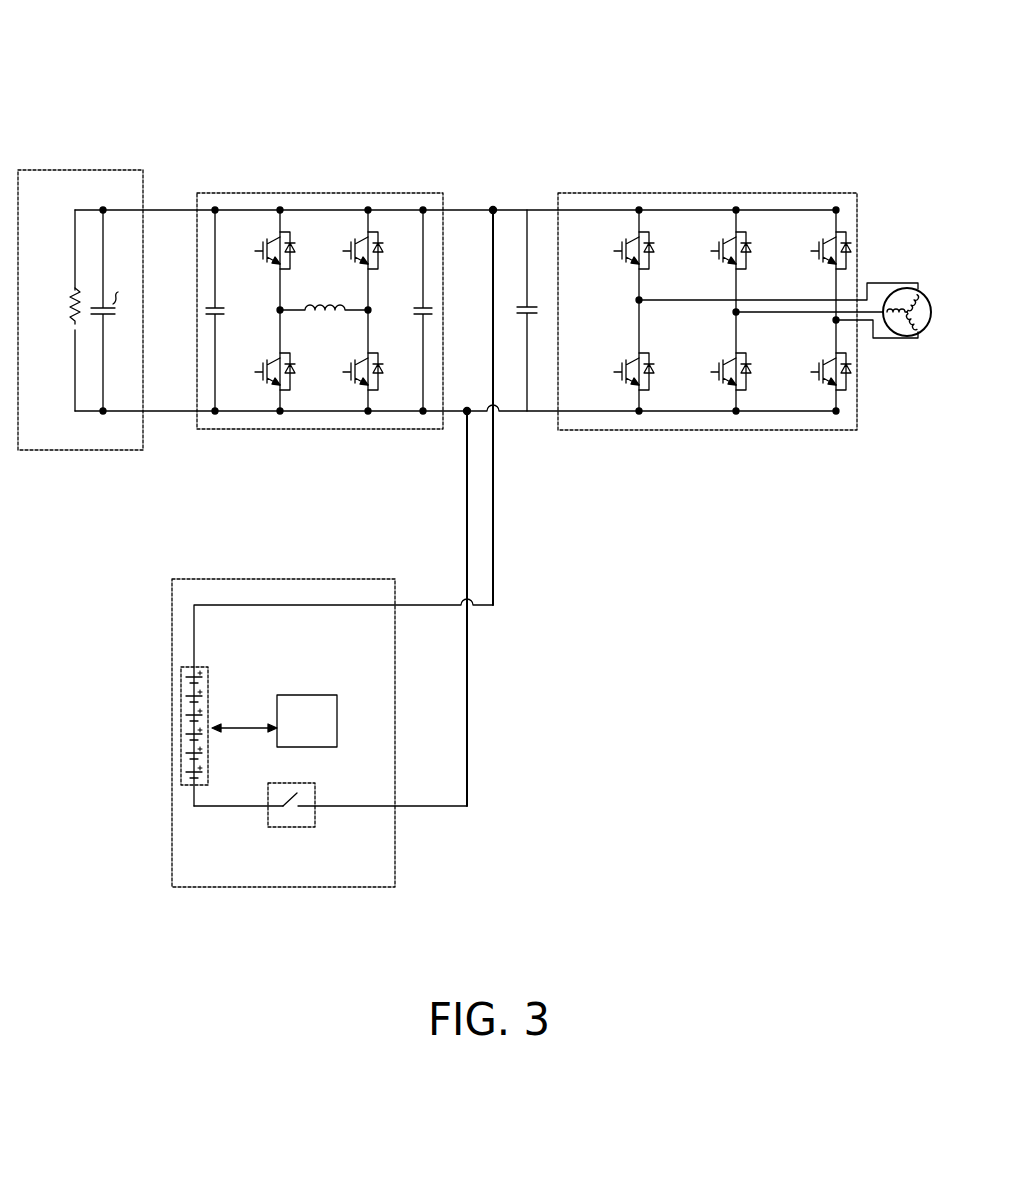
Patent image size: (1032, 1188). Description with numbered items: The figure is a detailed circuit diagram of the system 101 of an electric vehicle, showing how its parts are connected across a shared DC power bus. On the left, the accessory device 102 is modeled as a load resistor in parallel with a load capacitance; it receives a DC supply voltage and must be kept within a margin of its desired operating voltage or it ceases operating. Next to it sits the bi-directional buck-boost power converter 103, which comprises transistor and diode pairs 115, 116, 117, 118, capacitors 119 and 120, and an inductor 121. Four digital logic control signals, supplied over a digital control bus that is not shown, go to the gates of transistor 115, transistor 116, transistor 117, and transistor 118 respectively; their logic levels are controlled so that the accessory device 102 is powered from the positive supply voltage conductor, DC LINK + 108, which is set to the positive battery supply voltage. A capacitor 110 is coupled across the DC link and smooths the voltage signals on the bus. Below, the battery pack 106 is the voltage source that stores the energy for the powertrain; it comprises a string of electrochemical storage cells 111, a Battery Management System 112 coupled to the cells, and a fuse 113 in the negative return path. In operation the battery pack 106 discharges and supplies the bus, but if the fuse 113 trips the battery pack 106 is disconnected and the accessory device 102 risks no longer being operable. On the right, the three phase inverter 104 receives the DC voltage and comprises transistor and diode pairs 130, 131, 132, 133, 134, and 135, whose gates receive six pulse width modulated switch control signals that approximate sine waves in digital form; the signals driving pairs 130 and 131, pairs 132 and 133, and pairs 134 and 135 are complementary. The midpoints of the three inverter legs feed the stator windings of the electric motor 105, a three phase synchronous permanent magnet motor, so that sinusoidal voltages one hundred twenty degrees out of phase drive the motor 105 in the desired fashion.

The system 101 is at (112, 10).
The accessory device 102 is at (91, 170).
The bi-directional buck-boost power converter 103 is at (325, 193).
The inverter 104 is at (735, 193).
The electric motor 105 is at (907, 337).
The battery pack 106 is at (228, 579).
The positive supply voltage conductor (DC LINK +) 108 is at (460, 208).
The capacitor 110 is at (533, 302).
The electrochemical storage cells 111 is at (210, 697).
The Battery Management System (BMS) 112 is at (325, 695).
The fuse 113 is at (290, 828).
The transistor and diode pair 115 is at (266, 243).
The transistor and diode pair 116 is at (354, 243).
The transistor and diode pair 117 is at (266, 364).
The transistor and diode pair 118 is at (354, 364).
The capacitor 119 is at (228, 309).
The capacitor 120 is at (420, 309).
The inductor 121 is at (325, 309).
The transistor and diode pair 130 is at (625, 243).
The transistor and diode pair 131 is at (625, 364).
The transistor and diode pair 132 is at (722, 243).
The transistor and diode pair 133 is at (722, 364).
The transistor and diode pair 134 is at (822, 243).
The transistor and diode pair 135 is at (822, 364).